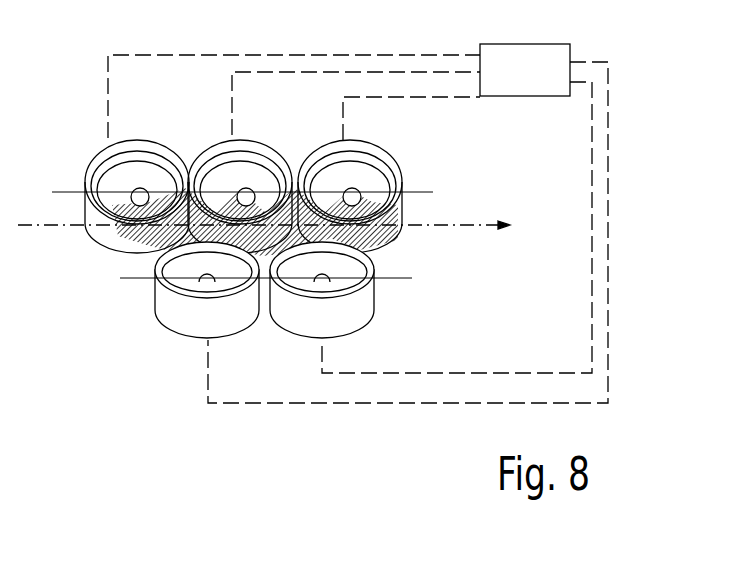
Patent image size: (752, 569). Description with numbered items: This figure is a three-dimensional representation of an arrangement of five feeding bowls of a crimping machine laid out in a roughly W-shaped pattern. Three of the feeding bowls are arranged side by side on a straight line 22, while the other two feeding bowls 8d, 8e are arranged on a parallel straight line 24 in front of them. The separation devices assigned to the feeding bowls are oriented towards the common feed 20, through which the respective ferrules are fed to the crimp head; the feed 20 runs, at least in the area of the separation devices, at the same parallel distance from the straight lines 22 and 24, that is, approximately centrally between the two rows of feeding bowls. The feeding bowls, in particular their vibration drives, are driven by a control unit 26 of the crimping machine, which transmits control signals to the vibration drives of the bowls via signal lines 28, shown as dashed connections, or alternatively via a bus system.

The signal lines 28 is at (187, 54).
The control unit 26 is at (525, 70).
The straight line 22 is at (424, 191).
The common feed 20 is at (466, 222).
The parallel straight line 24 is at (399, 278).
The feeding bowl 8d is at (178, 311).
The feeding bowl 8e is at (350, 313).